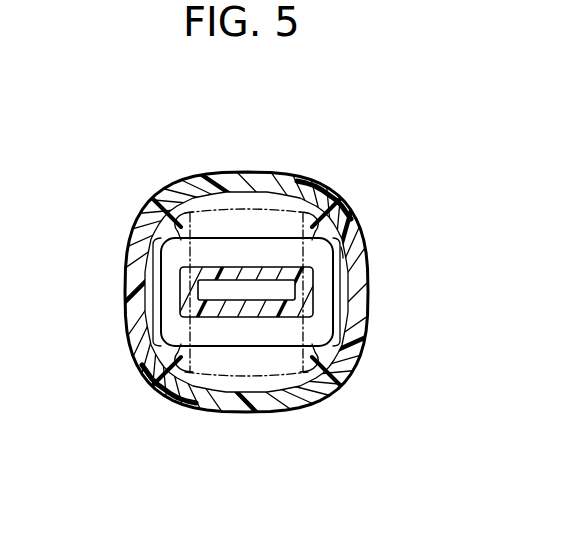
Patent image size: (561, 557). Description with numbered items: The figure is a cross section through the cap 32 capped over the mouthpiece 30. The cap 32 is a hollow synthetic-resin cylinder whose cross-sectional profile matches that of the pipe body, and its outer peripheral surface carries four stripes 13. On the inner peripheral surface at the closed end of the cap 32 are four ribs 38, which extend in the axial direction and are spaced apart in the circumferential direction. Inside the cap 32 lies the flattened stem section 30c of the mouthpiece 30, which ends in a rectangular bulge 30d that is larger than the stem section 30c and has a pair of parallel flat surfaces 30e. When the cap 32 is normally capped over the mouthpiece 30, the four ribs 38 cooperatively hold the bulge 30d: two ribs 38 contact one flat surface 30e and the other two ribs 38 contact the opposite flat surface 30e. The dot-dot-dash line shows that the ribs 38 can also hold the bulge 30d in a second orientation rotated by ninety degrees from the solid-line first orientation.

The stripes 13 is at (337, 186).
The mouthpiece 30 is at (157, 287).
The stem section 30c is at (316, 296).
The bulge 30d is at (343, 259).
The flat surfaces 30e is at (228, 246).
The cap 32 is at (370, 199).
The ribs 38 is at (176, 214).